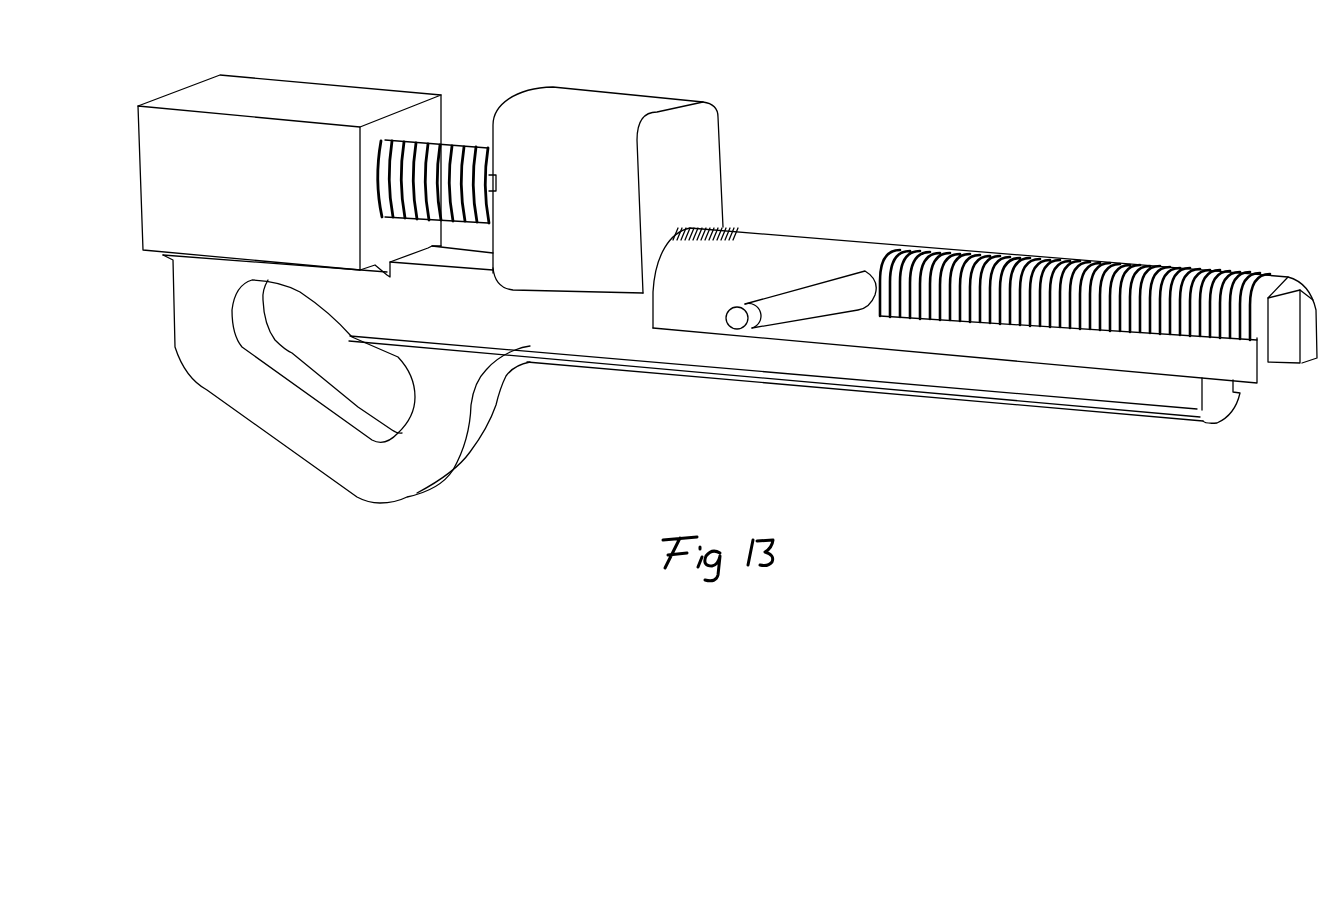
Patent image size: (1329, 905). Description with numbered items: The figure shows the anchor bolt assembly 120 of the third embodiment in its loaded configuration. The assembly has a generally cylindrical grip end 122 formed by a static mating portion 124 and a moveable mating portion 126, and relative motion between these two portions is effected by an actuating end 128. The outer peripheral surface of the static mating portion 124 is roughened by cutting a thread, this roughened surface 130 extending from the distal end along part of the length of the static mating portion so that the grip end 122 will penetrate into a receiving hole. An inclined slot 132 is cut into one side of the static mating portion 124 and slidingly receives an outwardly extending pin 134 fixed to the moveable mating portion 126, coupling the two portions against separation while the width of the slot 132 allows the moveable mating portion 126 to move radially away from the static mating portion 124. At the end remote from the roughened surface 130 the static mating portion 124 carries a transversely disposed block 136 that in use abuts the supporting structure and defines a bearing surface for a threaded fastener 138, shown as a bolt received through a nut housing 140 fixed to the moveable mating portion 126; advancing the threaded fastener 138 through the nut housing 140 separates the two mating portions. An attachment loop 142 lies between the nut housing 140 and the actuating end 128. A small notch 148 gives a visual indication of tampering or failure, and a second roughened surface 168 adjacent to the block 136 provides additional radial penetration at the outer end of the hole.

The anchor bolt assembly 120 is at (808, 12).
The grip end 122 is at (1058, 240).
The static mating portion 124 is at (820, 240).
The moveable mating portion 126 is at (570, 360).
The actuating end 128 is at (350, 62).
The roughened surface 130 is at (1150, 268).
The inclined slot 132 is at (777, 297).
The pin 134 is at (748, 330).
The transversely disposed block 136 is at (693, 150).
The threaded fastener 138 is at (440, 143).
The nut housing 140 is at (150, 173).
The attachment loop 142 is at (390, 487).
The notch 148 is at (497, 183).
The second roughened surface 168 is at (707, 230).